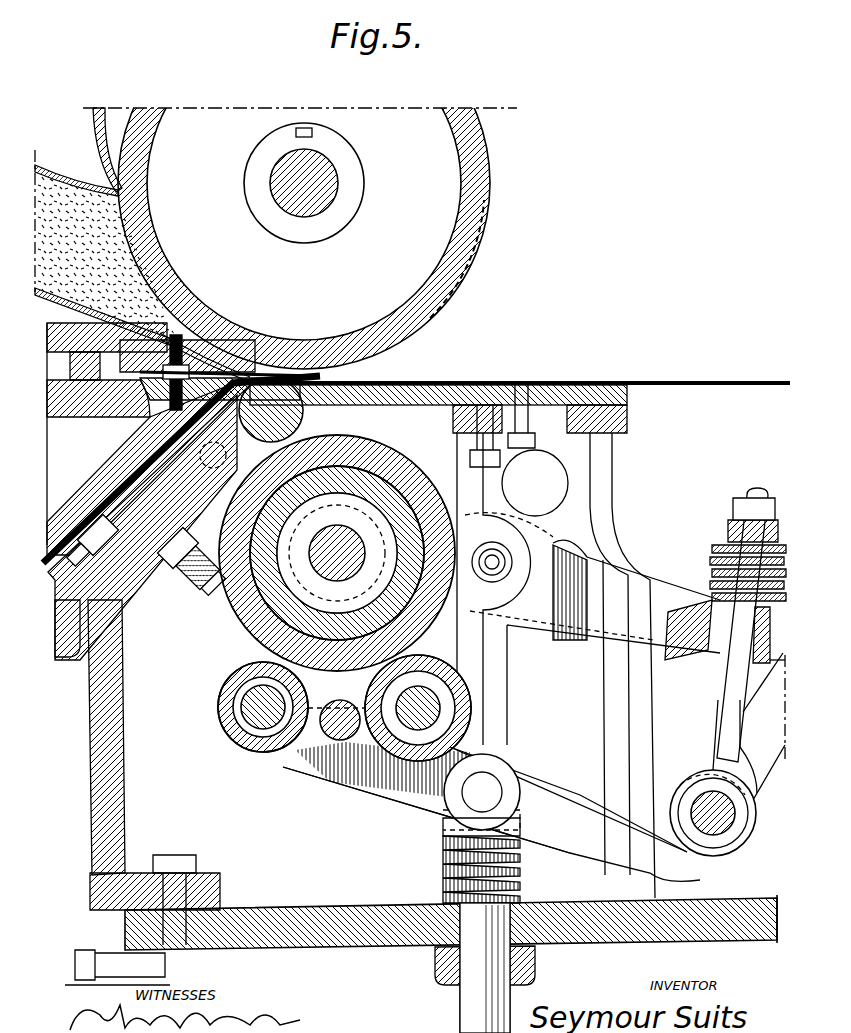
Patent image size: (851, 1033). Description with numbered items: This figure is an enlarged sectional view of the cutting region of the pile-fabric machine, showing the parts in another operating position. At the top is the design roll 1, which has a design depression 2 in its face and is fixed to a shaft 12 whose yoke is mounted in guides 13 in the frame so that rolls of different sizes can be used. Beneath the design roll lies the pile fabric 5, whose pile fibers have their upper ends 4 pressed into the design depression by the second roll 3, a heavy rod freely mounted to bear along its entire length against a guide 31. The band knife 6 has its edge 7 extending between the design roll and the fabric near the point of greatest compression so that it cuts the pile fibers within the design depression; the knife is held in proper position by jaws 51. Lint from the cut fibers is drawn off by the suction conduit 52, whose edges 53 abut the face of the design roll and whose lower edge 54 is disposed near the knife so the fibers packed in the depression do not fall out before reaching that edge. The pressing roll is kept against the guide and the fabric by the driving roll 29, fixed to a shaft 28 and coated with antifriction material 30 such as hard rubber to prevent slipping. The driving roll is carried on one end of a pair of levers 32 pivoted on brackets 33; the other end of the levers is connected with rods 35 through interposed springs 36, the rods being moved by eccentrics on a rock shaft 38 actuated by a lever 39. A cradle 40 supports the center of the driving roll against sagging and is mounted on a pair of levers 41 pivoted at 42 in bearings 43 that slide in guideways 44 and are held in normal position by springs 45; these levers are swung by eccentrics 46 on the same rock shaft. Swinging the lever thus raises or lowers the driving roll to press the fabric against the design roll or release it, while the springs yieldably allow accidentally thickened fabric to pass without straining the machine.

The roll 1 is at (472, 262).
The design depression 2 is at (448, 308).
The second roll 3 is at (303, 412).
The upper ends 4 is at (428, 381).
The pile fabric 5 is at (700, 387).
The band knife 6 is at (278, 372).
The edge 7 is at (312, 370).
The shaft 12 is at (338, 198).
The guides 13 is at (467, 553).
The shaft 28 is at (355, 550).
The driving roll 29 is at (415, 452).
The antifriction material 30 is at (360, 438).
The guide 31 is at (196, 492).
The levers 32 is at (572, 620).
The brackets 33 is at (622, 530).
The rods 35 is at (733, 683).
The springs 36 is at (726, 560).
The rock shaft 38 is at (700, 792).
The lever 39 is at (764, 726).
The cradle 40 is at (338, 760).
The levers 41 is at (540, 775).
The pivot 42 is at (482, 792).
The bearings 43 is at (442, 828).
The guideways 44 is at (440, 968).
The springs 45 is at (442, 876).
The eccentrics 46 is at (740, 826).
The jaws 51 is at (150, 367).
The suction conduit 52 is at (78, 173).
The edges 53 is at (122, 190).
The lower edge 54 is at (230, 344).